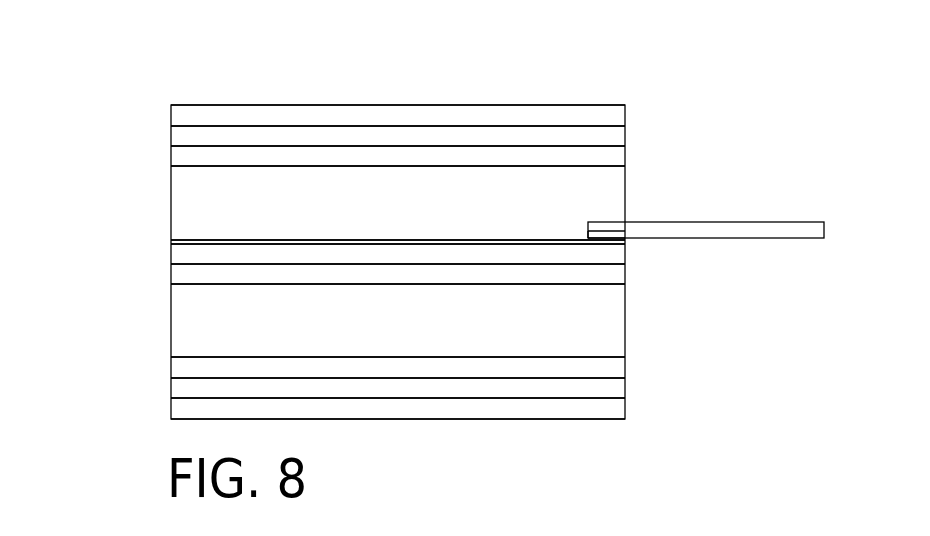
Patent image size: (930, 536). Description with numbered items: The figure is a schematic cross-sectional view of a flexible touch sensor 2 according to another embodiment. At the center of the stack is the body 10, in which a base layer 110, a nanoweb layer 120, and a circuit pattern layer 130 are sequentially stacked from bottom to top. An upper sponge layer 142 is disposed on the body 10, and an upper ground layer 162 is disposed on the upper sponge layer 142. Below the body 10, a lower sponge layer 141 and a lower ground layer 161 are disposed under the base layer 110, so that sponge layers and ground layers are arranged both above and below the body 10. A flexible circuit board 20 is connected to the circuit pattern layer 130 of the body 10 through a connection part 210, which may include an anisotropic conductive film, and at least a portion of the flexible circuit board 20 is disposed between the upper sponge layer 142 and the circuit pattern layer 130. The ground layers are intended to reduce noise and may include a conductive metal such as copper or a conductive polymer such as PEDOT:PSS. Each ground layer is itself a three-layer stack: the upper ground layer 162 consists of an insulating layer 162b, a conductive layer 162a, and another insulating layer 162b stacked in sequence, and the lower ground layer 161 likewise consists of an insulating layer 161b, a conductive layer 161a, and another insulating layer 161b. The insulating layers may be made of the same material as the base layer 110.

The flexible touch sensor 2 is at (194, 43).
The body 10 is at (67, 203).
The base layer 110 is at (175, 275).
The nanoweb layer 120 is at (175, 257).
The circuit pattern layer 130 is at (174, 240).
The lower sponge layer 141 is at (176, 309).
The upper sponge layer 142 is at (176, 203).
The lower ground layer 161 is at (760, 355).
The conductive layer 161a is at (617, 385).
The insulating layer 161b is at (617, 367).
The upper ground layer 162 is at (760, 103).
The conductive layer 162a is at (617, 133).
The insulating layer 162b is at (617, 114).
The flexible circuit board 20 is at (809, 232).
The connection part 210 is at (620, 235).